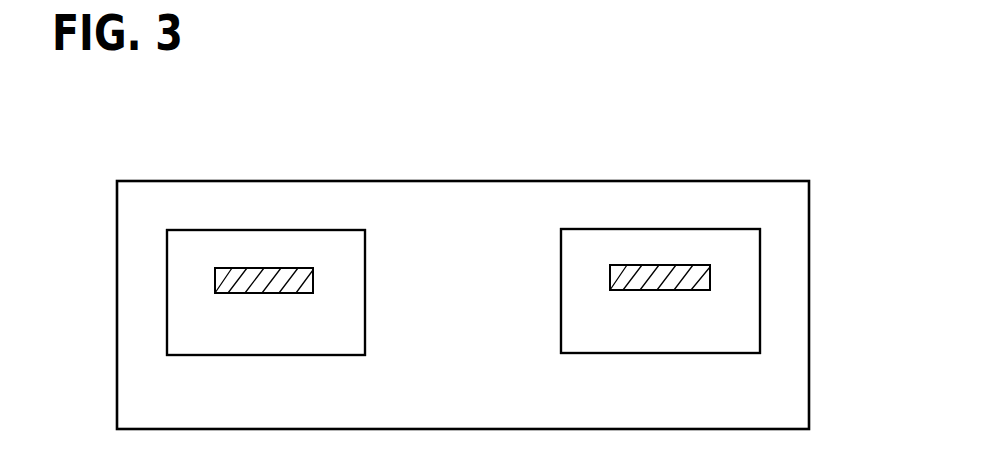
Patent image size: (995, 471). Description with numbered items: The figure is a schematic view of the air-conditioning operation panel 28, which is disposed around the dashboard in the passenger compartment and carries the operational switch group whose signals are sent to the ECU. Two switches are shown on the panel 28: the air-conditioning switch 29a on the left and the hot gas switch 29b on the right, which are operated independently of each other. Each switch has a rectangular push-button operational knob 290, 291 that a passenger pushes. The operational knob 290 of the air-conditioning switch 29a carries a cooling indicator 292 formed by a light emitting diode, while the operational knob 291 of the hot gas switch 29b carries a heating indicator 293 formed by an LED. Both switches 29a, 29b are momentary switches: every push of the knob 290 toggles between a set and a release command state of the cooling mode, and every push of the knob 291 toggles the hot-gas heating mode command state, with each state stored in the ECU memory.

The air-conditioning operation panel 28 is at (461, 180).
The air-conditioning switch 29a is at (322, 230).
The hot gas switch 29b is at (742, 228).
The operational knob 290 is at (192, 255).
The operational knob 291 is at (660, 253).
The cooling indicator 292 is at (252, 283).
The heating indicator 293 is at (627, 273).